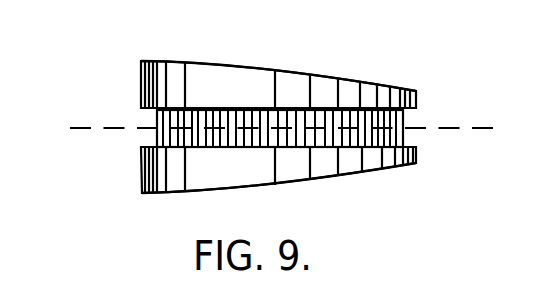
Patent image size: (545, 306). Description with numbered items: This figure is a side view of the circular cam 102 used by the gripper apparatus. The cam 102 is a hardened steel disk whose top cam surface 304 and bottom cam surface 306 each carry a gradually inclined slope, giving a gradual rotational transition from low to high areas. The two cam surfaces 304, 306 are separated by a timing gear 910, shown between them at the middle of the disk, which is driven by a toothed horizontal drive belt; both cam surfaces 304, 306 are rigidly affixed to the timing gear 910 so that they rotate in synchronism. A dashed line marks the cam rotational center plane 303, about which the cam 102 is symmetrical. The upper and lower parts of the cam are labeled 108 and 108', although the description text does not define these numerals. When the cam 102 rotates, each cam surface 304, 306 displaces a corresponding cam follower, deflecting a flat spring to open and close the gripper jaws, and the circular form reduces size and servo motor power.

The circular cam 102 is at (274, 133).
The upper tapered waveguide section 108 is at (295, 57).
The lower tapered waveguide section 108' is at (247, 203).
The cam rotational (center) plane 303 is at (108, 129).
The top cam surface 304 is at (352, 80).
The bottom cam surface 306 is at (357, 173).
The timing gear 910 is at (404, 118).